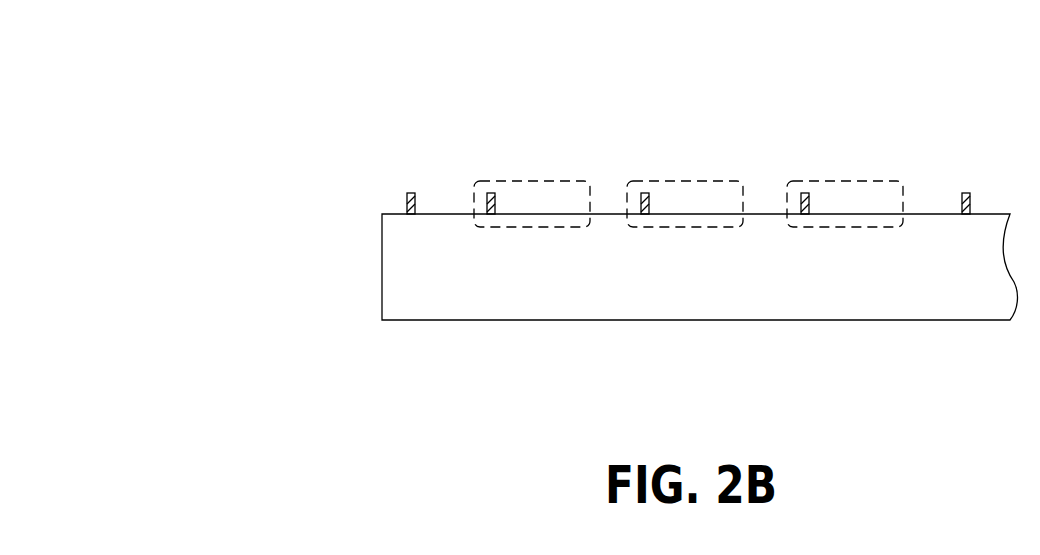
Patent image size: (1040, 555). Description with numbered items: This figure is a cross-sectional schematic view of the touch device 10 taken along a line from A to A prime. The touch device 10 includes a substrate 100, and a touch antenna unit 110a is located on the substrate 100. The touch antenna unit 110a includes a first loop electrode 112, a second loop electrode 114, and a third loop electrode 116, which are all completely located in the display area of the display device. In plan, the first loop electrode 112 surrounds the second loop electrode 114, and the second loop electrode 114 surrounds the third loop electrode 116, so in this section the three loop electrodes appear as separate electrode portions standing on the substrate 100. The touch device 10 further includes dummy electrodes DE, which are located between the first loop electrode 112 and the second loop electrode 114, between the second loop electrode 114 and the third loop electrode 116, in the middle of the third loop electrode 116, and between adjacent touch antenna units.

The touch device 10 is at (255, 190).
The substrate 100 is at (402, 266).
The dummy electrode DE is at (410, 193).
The touch antenna unit 110a is at (832, 88).
The first loop electrode 112 is at (532, 181).
The second loop electrode 114 is at (686, 181).
The third loop electrode 116 is at (820, 181).